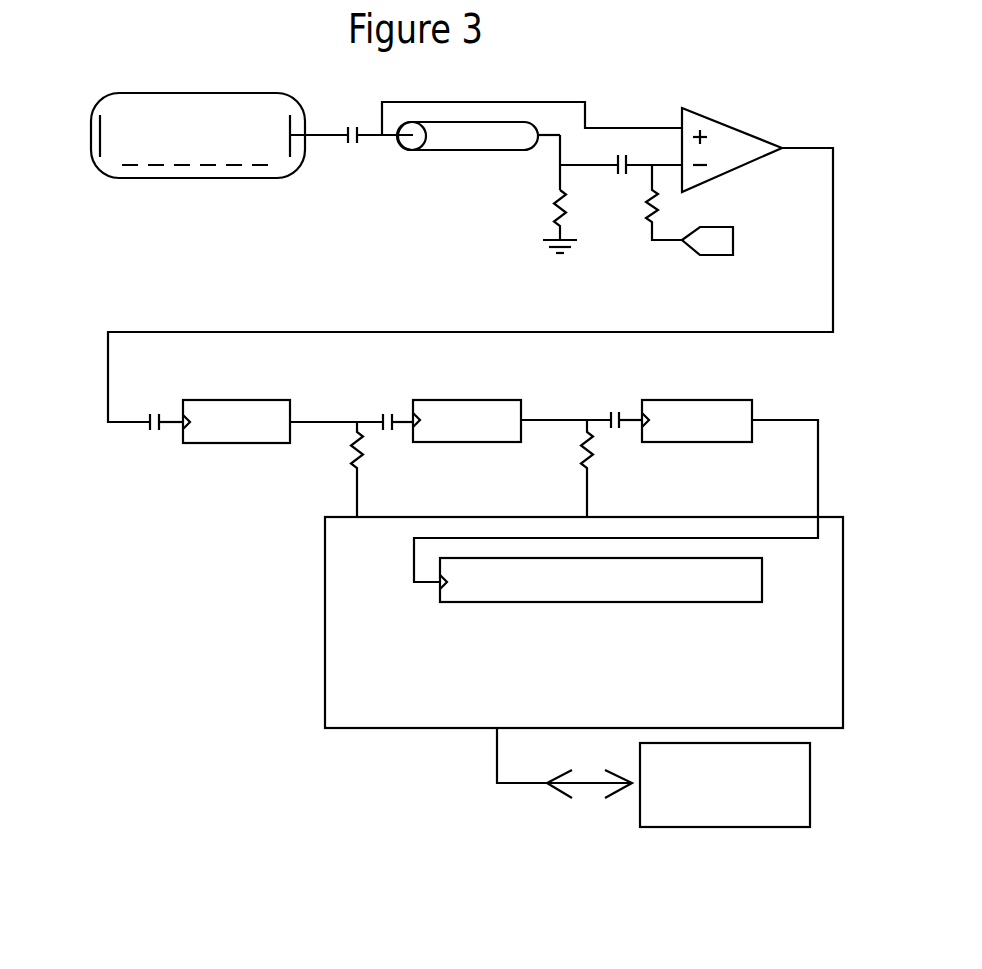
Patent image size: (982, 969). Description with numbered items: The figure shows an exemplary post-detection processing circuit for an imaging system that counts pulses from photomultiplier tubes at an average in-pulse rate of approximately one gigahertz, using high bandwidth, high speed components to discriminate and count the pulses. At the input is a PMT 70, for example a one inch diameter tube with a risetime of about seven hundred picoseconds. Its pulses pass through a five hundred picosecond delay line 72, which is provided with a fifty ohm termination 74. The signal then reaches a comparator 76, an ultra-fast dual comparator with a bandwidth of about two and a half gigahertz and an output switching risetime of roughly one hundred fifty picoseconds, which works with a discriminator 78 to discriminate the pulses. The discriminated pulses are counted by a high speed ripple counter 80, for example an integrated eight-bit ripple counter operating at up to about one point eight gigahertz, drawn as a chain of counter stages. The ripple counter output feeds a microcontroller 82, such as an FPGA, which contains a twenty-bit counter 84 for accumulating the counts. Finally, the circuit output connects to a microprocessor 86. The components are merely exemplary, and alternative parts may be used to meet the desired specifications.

The PMT 70 is at (95, 90).
The delay line 72 is at (423, 167).
The termination 74 is at (526, 227).
The comparator 76 is at (730, 100).
The discriminator 78 is at (686, 256).
The high speed ripple counter 80 is at (195, 457).
The microcontroller 82 is at (312, 690).
The 20-bit counter 84 is at (652, 610).
The microprocessor 86 is at (822, 777).